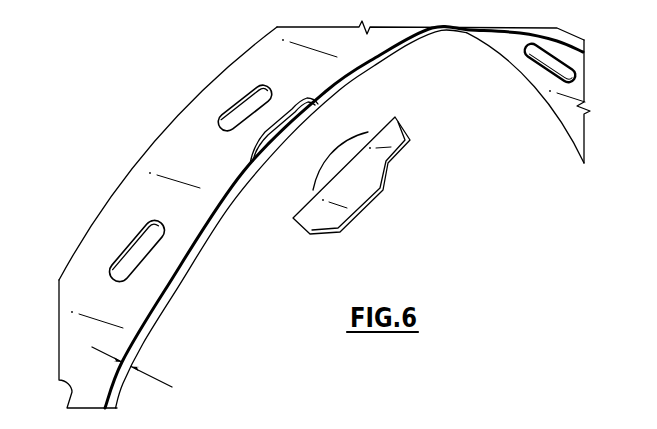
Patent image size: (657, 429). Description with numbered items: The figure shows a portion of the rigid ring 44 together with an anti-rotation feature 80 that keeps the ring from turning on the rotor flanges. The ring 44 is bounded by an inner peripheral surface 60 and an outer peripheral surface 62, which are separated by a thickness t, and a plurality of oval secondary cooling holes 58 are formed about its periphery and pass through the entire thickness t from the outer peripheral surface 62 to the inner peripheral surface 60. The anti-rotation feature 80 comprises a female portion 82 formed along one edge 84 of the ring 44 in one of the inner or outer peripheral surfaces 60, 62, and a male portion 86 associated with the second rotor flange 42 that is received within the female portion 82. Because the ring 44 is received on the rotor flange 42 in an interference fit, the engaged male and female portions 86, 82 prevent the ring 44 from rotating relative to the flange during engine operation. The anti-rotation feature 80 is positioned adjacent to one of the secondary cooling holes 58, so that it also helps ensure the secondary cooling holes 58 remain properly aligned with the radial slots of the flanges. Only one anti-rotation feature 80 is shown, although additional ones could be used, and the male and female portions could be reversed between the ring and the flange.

The second rotor flange 42 is at (404, 151).
The rigid ring 44 is at (180, 157).
The secondary cooling holes 58 is at (241, 112).
The inner peripheral surface 60 is at (528, 70).
The outer peripheral surface 62 is at (90, 258).
The anti-rotation feature 80 is at (331, 113).
The female portion 82 is at (268, 135).
The edge 84 is at (203, 238).
The male portion 86 is at (343, 157).
The thickness t is at (162, 382).